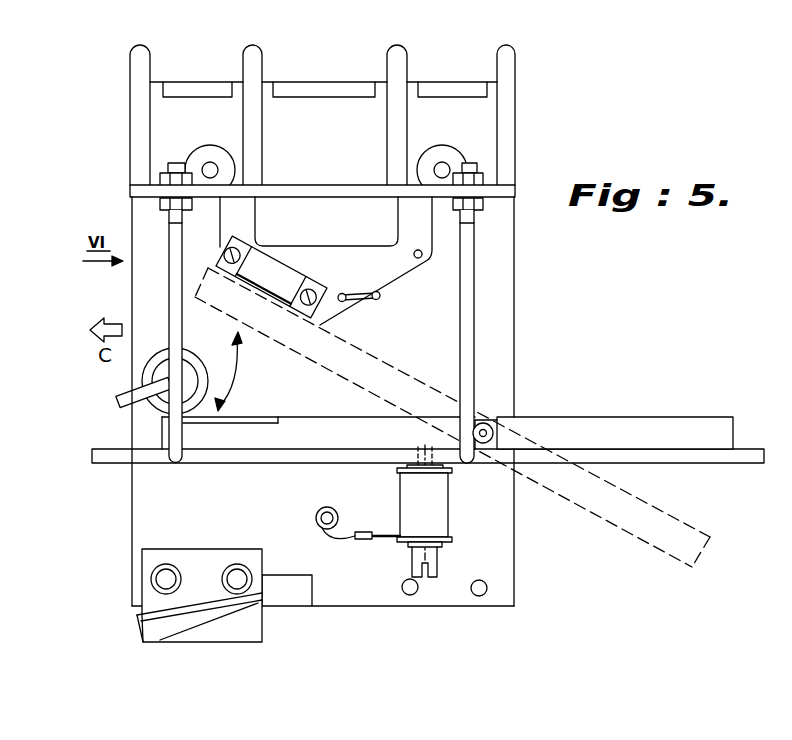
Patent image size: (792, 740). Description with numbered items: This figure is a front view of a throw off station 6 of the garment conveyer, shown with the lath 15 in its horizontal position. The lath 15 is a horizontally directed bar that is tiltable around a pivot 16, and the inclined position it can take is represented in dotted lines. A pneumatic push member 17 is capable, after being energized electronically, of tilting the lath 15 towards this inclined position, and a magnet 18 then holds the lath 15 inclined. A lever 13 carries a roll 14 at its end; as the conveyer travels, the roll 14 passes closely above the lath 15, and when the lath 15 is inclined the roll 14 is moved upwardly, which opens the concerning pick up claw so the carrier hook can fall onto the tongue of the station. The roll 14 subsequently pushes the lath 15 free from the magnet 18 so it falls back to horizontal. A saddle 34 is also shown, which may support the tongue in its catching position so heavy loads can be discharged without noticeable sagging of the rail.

The throw off station 6 is at (504, 283).
The lever 13 is at (138, 388).
The roll 14 is at (192, 363).
The lath 15 is at (640, 425).
The pivot 16 is at (488, 424).
The pneumatic push member 17 is at (438, 512).
The magnet 18 is at (294, 271).
The saddle 34 is at (245, 615).